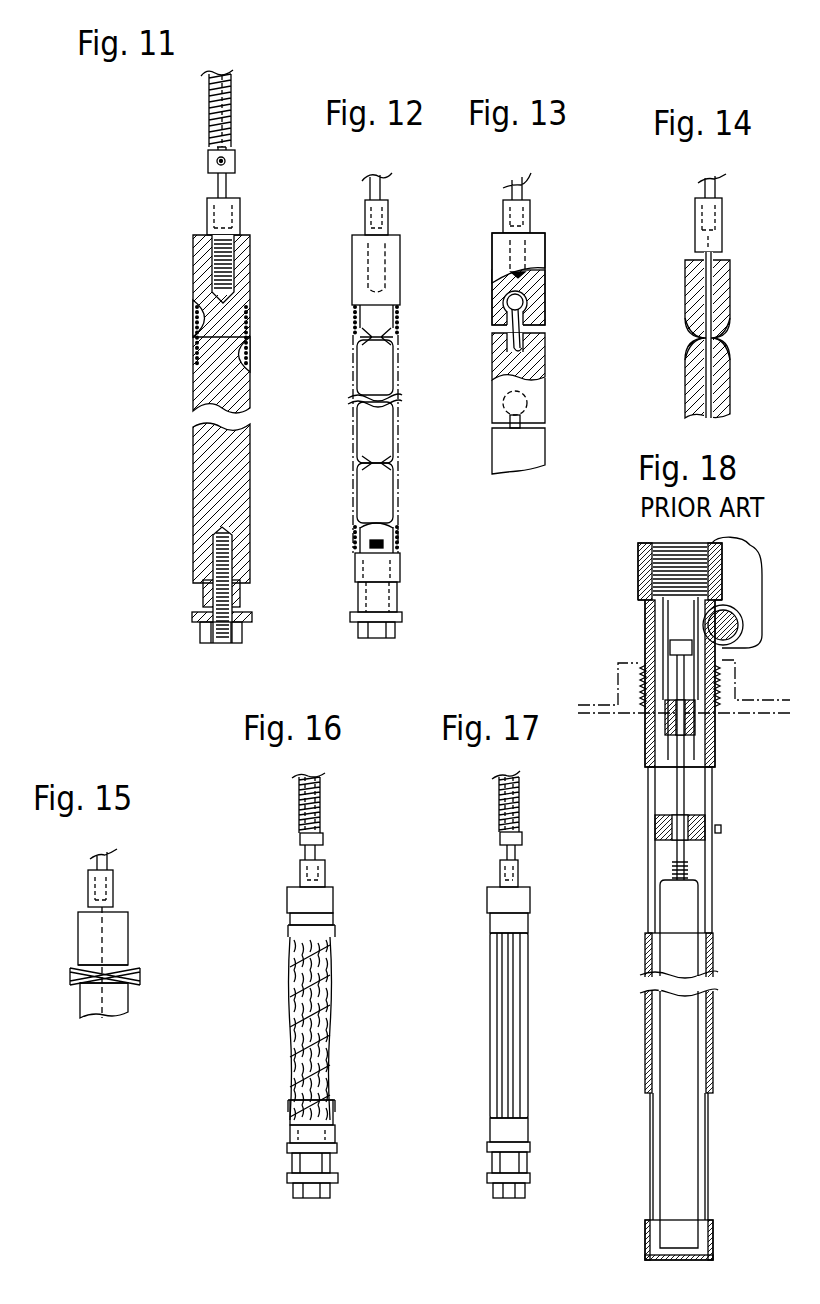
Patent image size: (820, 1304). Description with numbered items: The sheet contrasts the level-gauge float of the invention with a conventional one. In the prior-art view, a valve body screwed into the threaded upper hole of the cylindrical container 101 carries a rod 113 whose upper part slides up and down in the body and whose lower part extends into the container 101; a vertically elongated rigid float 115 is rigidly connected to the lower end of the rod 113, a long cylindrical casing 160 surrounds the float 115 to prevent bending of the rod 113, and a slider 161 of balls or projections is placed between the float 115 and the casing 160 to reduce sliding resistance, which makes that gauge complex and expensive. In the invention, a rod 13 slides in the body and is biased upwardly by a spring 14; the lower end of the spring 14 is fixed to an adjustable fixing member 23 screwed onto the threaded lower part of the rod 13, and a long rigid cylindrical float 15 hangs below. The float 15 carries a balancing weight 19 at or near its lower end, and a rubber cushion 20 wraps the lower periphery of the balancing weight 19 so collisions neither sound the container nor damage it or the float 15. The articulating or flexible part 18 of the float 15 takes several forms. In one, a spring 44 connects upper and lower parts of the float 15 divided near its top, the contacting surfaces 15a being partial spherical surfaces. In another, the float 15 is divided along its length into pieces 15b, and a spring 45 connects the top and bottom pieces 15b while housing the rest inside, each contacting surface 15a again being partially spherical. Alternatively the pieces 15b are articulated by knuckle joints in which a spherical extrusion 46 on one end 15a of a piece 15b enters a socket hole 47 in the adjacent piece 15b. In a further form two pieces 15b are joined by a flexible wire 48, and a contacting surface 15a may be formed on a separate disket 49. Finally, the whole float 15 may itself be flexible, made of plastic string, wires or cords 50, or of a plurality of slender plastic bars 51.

In FIG. 11, the rod 13 is at (238, 102).
In FIG. 12, the rod 13 is at (380, 188).
In FIG. 13, the rod 13 is at (517, 186).
In FIG. 14, the rod 13 is at (716, 181).
In FIG. 15, the rod 13 is at (108, 857).
In FIG. 16, the rod 13 is at (298, 796).
In FIG. 17, the rod 13 is at (522, 790).
In FIG. 11, the spring 14 is at (238, 88).
In FIG. 16, the spring 14 is at (325, 790).
In FIG. 17, the spring 14 is at (500, 810).
In FIG. 11, the float 15 is at (225, 424).
In FIG. 12, the float 15 is at (418, 421).
In FIG. 13, the float 15 is at (546, 337).
In FIG. 14, the float 15 is at (711, 308).
In FIG. 15, the float 15 is at (125, 944).
In FIG. 16, the float 15 is at (356, 1003).
In FIG. 17, the float 15 is at (542, 997).
In FIG. 11, the contacting surface 15a is at (205, 301).
In FIG. 12, the contacting surface 15a is at (365, 337).
In FIG. 13, the contacting surface 15a is at (502, 323).
In FIG. 14, the contacting surface 15a is at (702, 338).
In FIG. 15, the contacting surface 15a is at (140, 977).
In FIG. 12, the piece 15b is at (384, 357).
In FIG. 13, the piece 15b is at (540, 347).
In FIG. 14, the piece 15b is at (723, 392).
In FIG. 15, the piece 15b is at (82, 932).
In FIG. 11, the articulating or flexible part 18 is at (238, 336).
In FIG. 12, the articulating or flexible part 18 is at (400, 520).
In FIG. 13, the articulating or flexible part 18 is at (578, 292).
In FIG. 14, the articulating or flexible part 18 is at (712, 308).
In FIG. 16, the articulating or flexible part 18 is at (330, 1002).
In FIG. 17, the articulating or flexible part 18 is at (520, 1010).
In FIG. 11, the balancing weight 19 is at (203, 593).
In FIG. 12, the balancing weight 19 is at (388, 598).
In FIG. 11, the cushion 20 is at (192, 617).
In FIG. 12, the cushion 20 is at (402, 617).
In FIG. 16, the cushion 20 is at (337, 1178).
In FIG. 17, the cushion 20 is at (530, 1175).
In FIG. 11, the adjustable fixing member 23 is at (208, 160).
In FIG. 11, the spring 44 is at (261, 328).
In FIG. 12, the spring 45 is at (441, 429).
In FIG. 13, the spherical extrusion 46 is at (527, 308).
In FIG. 13, the socket hole 47 is at (524, 300).
In FIG. 14, the flexible wire 48 is at (748, 335).
In FIG. 15, the flexible wire 48 is at (170, 962).
In FIG. 15, the disket 49 is at (70, 975).
In FIG. 16, the cords 50 is at (357, 1028).
In FIG. 17, the slender plastic bars 51 is at (535, 1025).
In FIG. 18, the container 101 is at (773, 700).
In FIG. 18, the rod 113 is at (680, 788).
In FIG. 18, the float 115 is at (680, 1053).
In FIG. 18, the casing 160 is at (674, 898).
In FIG. 18, the slider 161 is at (655, 1172).